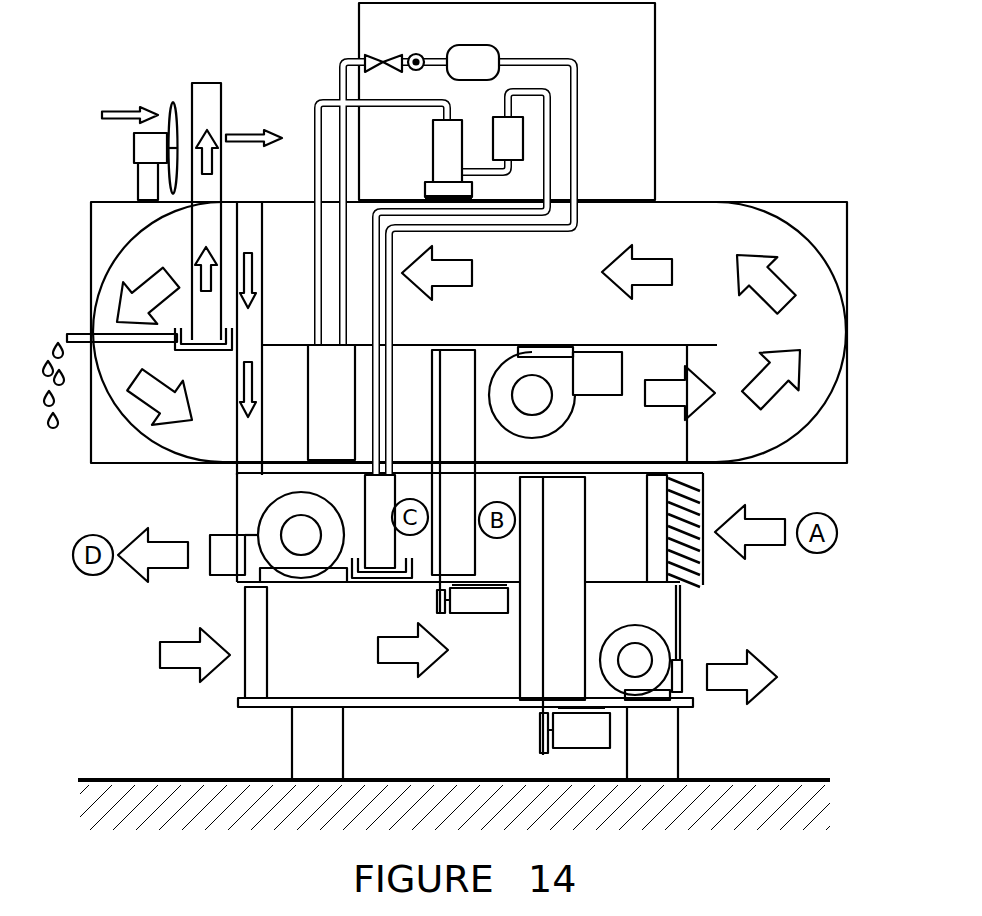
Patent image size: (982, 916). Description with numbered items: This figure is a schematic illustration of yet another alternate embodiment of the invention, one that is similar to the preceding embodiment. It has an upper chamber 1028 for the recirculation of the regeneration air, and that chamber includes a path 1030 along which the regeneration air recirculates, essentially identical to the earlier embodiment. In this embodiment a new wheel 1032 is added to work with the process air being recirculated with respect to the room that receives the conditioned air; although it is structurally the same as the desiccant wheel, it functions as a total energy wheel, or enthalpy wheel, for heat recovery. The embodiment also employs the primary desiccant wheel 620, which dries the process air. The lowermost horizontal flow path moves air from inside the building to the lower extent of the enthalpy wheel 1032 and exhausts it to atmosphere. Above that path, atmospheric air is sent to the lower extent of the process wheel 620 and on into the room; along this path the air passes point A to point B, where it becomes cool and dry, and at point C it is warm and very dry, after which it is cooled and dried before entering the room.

The upper chamber 1028 is at (693, 200).
The path 1030 is at (793, 332).
The primary desiccant wheel 620 is at (457, 548).
The wheel 1032 is at (533, 680).